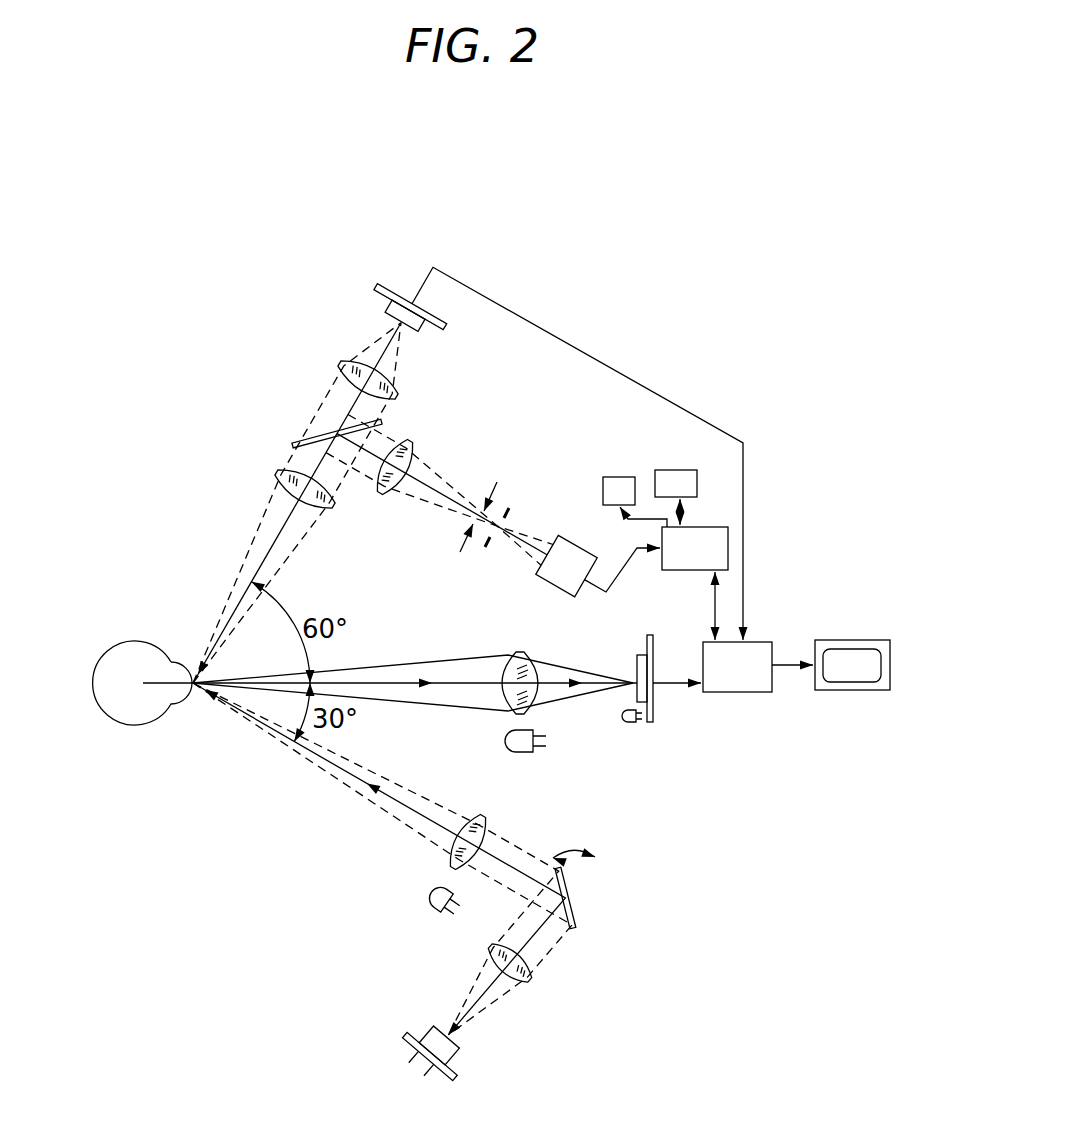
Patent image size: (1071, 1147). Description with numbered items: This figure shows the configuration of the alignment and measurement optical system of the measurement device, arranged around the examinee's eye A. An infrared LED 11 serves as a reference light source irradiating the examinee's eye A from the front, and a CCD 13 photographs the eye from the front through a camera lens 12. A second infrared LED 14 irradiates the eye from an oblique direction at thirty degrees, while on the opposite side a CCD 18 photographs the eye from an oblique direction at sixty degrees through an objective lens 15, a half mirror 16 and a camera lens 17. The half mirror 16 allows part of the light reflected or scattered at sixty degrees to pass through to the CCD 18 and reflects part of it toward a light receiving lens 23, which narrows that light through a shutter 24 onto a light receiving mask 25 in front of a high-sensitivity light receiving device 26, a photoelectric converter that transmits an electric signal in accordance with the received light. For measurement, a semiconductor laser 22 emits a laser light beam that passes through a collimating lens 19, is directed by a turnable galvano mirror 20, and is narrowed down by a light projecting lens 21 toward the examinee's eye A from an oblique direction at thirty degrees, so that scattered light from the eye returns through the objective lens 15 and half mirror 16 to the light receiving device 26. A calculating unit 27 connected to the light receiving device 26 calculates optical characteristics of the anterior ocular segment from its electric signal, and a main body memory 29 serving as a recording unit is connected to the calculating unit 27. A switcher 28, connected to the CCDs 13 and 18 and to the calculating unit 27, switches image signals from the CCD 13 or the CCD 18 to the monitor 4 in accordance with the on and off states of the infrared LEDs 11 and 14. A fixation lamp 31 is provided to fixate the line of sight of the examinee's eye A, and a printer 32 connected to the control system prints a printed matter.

The examinee's eye A is at (133, 641).
The monitor 4 is at (848, 639).
The infrared LED 11 is at (505, 745).
The camera lens 12 is at (540, 697).
The CCD 13 is at (655, 702).
The infrared LED 14 is at (430, 910).
The objective lens 15 is at (330, 511).
The half mirror 16 is at (306, 439).
The camera lens 17 is at (348, 365).
The CCD 18 is at (414, 297).
The collimating lens 19 is at (530, 975).
The galvano mirror 20 is at (577, 915).
The light projecting lens 21 is at (485, 822).
The semiconductor laser 22 is at (452, 1056).
The light receiving lens 23 is at (411, 446).
The shutter 24 is at (455, 548).
The light receiving mask 25 is at (492, 543).
The high-sensitivity light receiving device 26 is at (553, 588).
The calculating unit 27 is at (675, 571).
The switcher 28 is at (750, 693).
The main body memory 29 is at (680, 469).
The fixation lamp 31 is at (628, 723).
The printer 32 is at (620, 476).